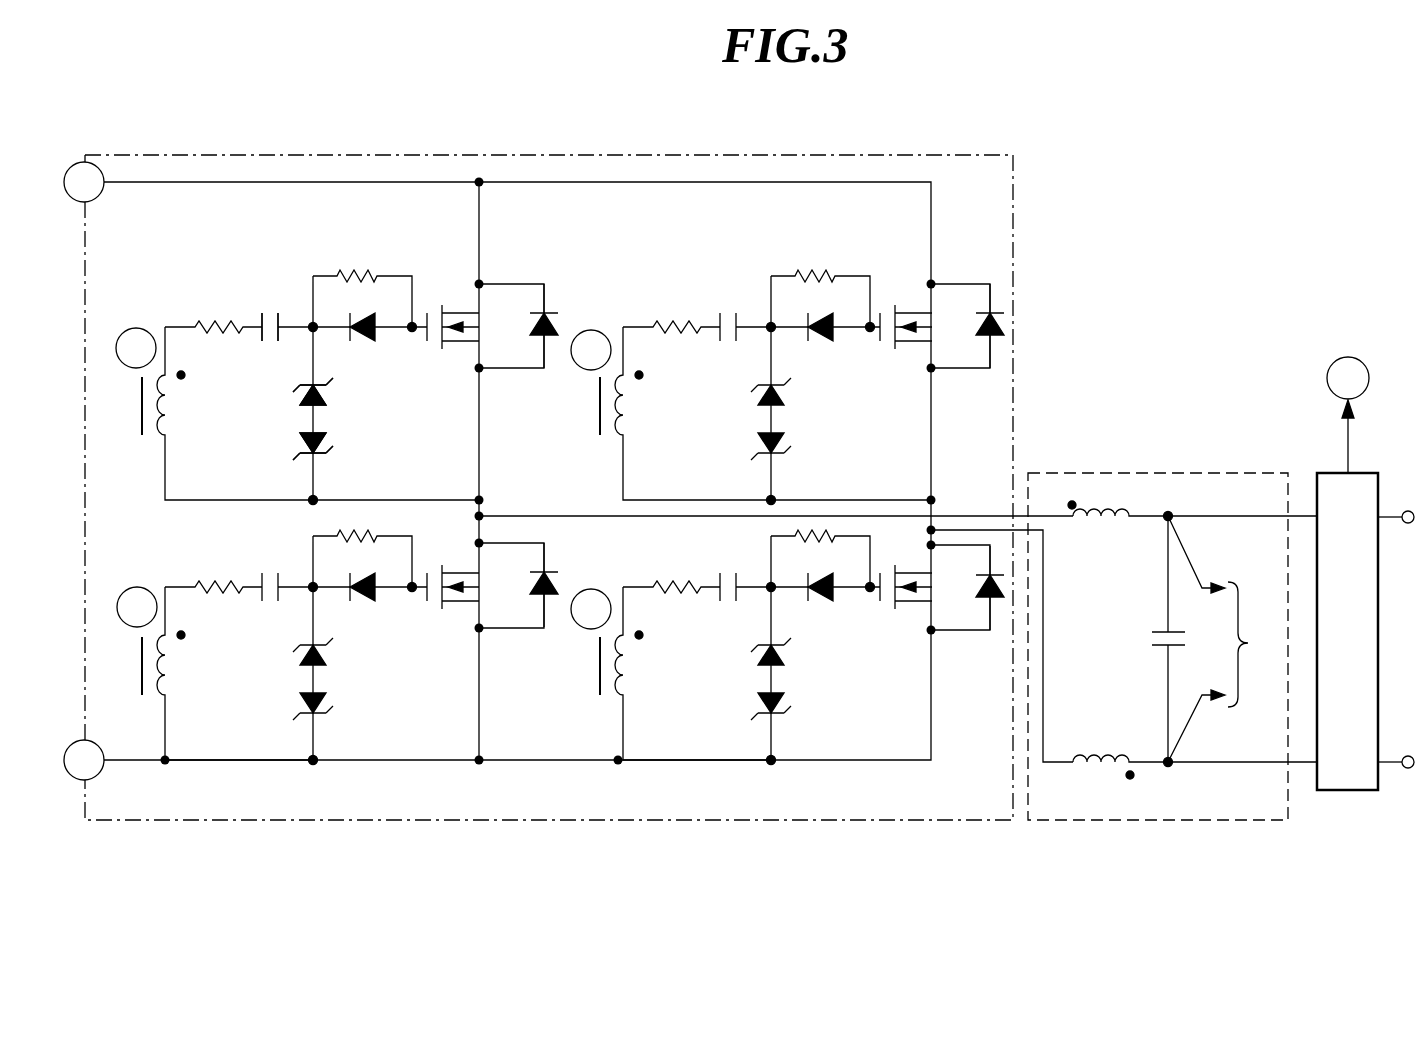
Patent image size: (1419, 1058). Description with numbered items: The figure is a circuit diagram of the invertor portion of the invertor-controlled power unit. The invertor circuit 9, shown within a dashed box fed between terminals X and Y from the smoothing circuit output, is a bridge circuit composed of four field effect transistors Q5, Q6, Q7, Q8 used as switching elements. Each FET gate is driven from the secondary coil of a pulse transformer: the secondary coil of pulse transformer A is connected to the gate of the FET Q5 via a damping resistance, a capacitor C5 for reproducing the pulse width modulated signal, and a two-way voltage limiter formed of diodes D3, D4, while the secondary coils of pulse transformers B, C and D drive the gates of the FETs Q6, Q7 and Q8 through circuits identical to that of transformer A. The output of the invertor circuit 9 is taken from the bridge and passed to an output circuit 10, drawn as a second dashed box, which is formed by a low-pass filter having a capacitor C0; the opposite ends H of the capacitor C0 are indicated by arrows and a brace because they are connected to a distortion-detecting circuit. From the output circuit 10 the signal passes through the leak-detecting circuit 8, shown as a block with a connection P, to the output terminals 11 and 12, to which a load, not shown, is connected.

The leak-detecting circuit 8 is at (1335, 473).
The invertor circuit 9 is at (1013, 243).
The output circuit 10 is at (1163, 472).
The output terminal 11 is at (1408, 524).
The output terminal 12 is at (1406, 754).
The FET Q5 is at (518, 326).
The FET Q6 is at (967, 326).
The FET Q7 is at (967, 587).
The FET Q8 is at (518, 585).
The capacitor C5 is at (272, 309).
The diode D3 is at (336, 397).
The diode D4 is at (336, 449).
The capacitor C0 is at (1148, 639).